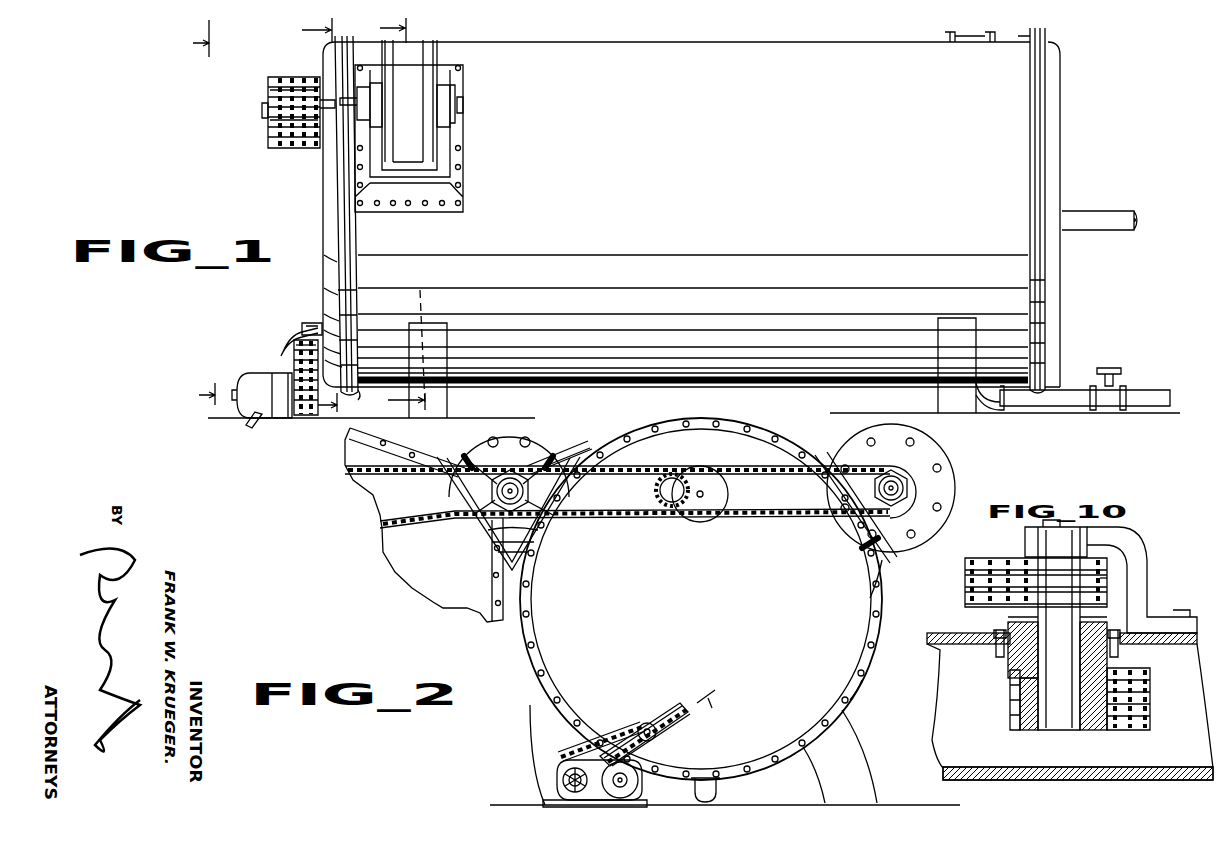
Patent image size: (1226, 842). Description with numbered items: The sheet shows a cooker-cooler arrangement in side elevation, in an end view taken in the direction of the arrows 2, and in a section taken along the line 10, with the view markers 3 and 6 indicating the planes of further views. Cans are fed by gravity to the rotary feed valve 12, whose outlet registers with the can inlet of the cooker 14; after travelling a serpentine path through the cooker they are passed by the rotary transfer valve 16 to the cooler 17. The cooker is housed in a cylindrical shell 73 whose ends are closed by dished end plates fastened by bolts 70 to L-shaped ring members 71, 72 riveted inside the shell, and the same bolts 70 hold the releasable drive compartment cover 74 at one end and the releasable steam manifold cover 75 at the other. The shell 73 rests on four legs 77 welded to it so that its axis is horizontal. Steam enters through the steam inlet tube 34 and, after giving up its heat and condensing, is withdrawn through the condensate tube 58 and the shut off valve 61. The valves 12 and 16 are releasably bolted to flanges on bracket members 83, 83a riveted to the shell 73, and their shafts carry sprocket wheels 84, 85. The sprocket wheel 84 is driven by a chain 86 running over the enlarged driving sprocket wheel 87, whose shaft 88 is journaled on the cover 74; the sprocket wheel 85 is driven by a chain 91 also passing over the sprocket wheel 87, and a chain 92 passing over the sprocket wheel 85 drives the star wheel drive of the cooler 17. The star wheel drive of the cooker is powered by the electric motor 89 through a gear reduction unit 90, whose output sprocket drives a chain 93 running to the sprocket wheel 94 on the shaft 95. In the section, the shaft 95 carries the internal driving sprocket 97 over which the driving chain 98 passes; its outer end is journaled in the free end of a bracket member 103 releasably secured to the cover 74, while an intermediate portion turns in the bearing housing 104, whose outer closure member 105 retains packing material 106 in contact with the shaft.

In FIG. 1, the view direction arrows 2 is at (197, 212).
In FIG. 1, the section line 3- 3 is at (410, 217).
In FIG. 1, the section line 6- 6 is at (306, 232).
In FIG. 2, the section line 10— 10 is at (657, 697).
In FIG. 1, the rotary feed valve 12 is at (446, 50).
In FIG. 2, the rotary feed valve 12 is at (958, 468).
In FIG. 1, the cooker 14 is at (811, 34).
In FIG. 2, the cooker 14 is at (880, 676).
In FIG. 2, the rotary transfer valve 16 is at (470, 447).
In FIG. 2, the cooler 17 is at (440, 613).
In FIG. 1, the steam inlet tube 34 is at (1100, 214).
In FIG. 1, the condensate tube 58 is at (1072, 388).
In FIG. 2, the condensate tube 58 is at (725, 790).
In FIG. 1, the shut off valve 61 is at (1114, 368).
In FIG. 2, the bolts 70 is at (855, 688).
In FIG. 1, the L-shaped ring member 71 is at (345, 392).
In FIG. 1, the L-shaped ring member 72 is at (1030, 36).
In FIG. 1, the cylindrical shell 73 is at (752, 380).
In FIG. 2, the drive compartment cover 74 is at (862, 592).
In FIG. 10, the drive compartment cover 74 is at (935, 632).
In FIG. 1, the steam manifold cover 75 is at (1063, 136).
In FIG. 1, the legs 77 is at (940, 388).
In FIG. 2, the legs 77 is at (865, 780).
In FIG. 2, the bracket member 83 is at (815, 456).
In FIG. 2, the bracket member 83a is at (584, 466).
In FIG. 2, the sprocket wheel 84 is at (880, 468).
In FIG. 2, the sprocket wheel 85 is at (525, 468).
In FIG. 1, the chain 86 is at (306, 150).
In FIG. 2, the chain 86 is at (760, 462).
In FIG. 1, the sprocket wheel 87 is at (268, 97).
In FIG. 2, the sprocket wheel 87 is at (660, 492).
In FIG. 1, the shaft 88 is at (262, 112).
In FIG. 2, the shaft 88 is at (699, 500).
In FIG. 1, the motor 89 is at (258, 375).
In FIG. 2, the motor 89 is at (645, 785).
In FIG. 1, the gear reduction unit 90 is at (284, 418).
In FIG. 2, the gear reduction unit 90 is at (560, 765).
In FIG. 1, the chain 91 is at (268, 143).
In FIG. 2, the chain 91 is at (623, 460).
In FIG. 2, the chain 92 is at (420, 522).
In FIG. 1, the chain 93 is at (308, 416).
In FIG. 2, the chain 93 is at (578, 755).
In FIG. 10, the chain 93 is at (985, 560).
In FIG. 1, the sprocket wheel 94 is at (300, 354).
In FIG. 2, the sprocket wheel 94 is at (638, 722).
In FIG. 10, the sprocket wheel 94 is at (1105, 581).
In FIG. 1, the star wheel drive shaft 95 is at (285, 345).
In FIG. 2, the star wheel drive shaft 95 is at (660, 735).
In FIG. 10, the star wheel drive shaft 95 is at (1059, 728).
In FIG. 10, the internal driving sprocket 97 is at (1014, 728).
In FIG. 10, the driving chain 98 is at (1134, 728).
In FIG. 1, the bracket member 103 is at (308, 320).
In FIG. 2, the bracket member 103 is at (670, 705).
In FIG. 10, the bracket member 103 is at (1134, 546).
In FIG. 10, the bearing housing 104 is at (1110, 650).
In FIG. 10, the outer closure member 105 is at (1100, 616).
In FIG. 10, the packing material 106 is at (1010, 620).